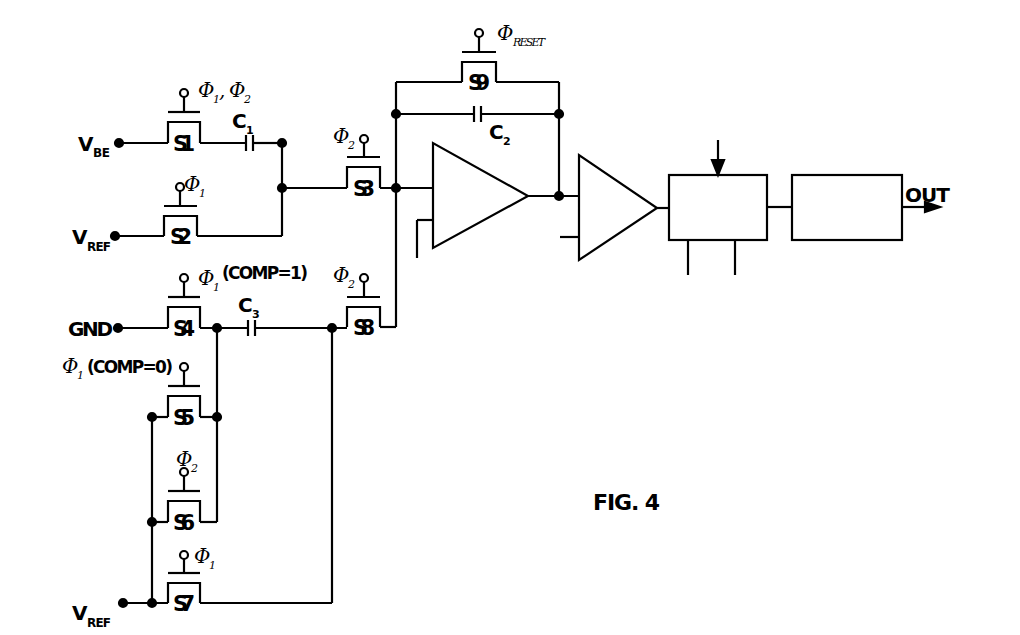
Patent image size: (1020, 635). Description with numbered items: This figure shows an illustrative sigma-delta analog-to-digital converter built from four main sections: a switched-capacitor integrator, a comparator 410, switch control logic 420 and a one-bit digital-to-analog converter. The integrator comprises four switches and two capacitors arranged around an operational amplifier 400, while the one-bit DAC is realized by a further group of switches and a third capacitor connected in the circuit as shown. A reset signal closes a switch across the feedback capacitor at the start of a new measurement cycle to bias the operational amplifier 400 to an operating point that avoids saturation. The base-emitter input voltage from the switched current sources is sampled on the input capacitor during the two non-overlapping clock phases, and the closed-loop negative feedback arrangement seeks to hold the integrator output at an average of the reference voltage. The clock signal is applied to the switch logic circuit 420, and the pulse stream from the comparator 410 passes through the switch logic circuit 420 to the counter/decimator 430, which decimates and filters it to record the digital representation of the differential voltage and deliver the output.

The operational amplifier 400 is at (468, 232).
The comparator 410 is at (603, 245).
The switch logic circuit 420 is at (748, 175).
The counter/decimator 430 is at (848, 175).